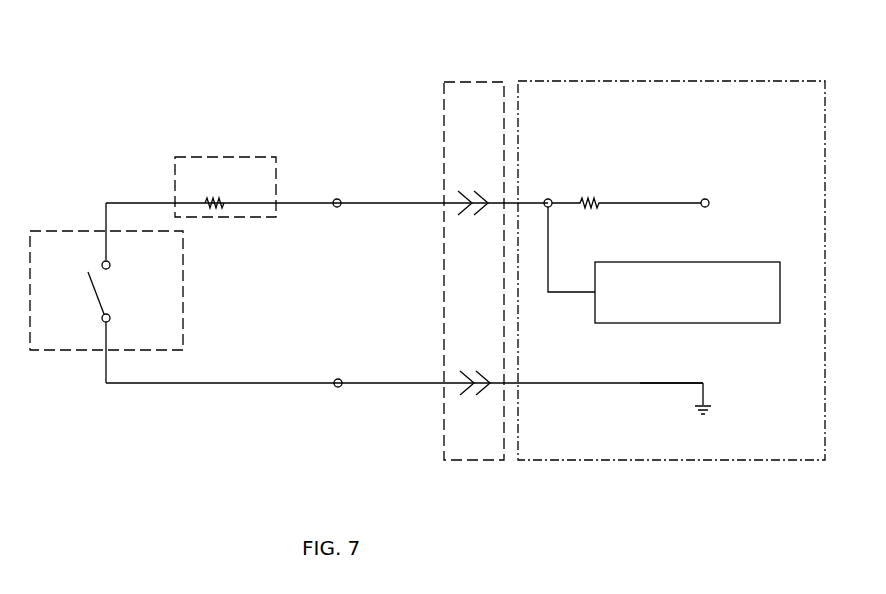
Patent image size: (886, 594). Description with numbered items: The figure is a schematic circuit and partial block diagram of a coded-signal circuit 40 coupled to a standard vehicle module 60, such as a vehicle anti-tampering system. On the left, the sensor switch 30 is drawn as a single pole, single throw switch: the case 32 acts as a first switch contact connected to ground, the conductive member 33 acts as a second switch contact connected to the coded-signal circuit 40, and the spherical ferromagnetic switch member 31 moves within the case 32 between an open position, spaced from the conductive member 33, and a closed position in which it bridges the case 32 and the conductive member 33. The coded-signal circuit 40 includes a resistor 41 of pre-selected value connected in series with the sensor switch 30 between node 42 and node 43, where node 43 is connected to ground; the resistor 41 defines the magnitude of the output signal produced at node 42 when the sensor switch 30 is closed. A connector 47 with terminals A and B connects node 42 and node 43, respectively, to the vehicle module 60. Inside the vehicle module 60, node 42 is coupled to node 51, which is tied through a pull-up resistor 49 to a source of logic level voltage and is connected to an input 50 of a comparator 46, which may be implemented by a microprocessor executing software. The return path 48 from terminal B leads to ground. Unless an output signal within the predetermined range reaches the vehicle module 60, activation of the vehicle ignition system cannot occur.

The sensor switch 30 is at (67, 231).
The switch member 31 is at (99, 311).
The case 32 is at (111, 318).
The conductive member 33 is at (111, 265).
The coded-signal circuit 40 is at (296, 153).
The resistor 41 is at (213, 195).
The node 42 is at (333, 207).
The node 43 is at (342, 387).
The comparator 46 is at (680, 323).
The connector 47 is at (444, 93).
The ground line 48 is at (645, 385).
The pull-up resistor 49 is at (584, 205).
The input 50 is at (552, 296).
The node 51 is at (548, 198).
The vehicle module 60 is at (668, 80).